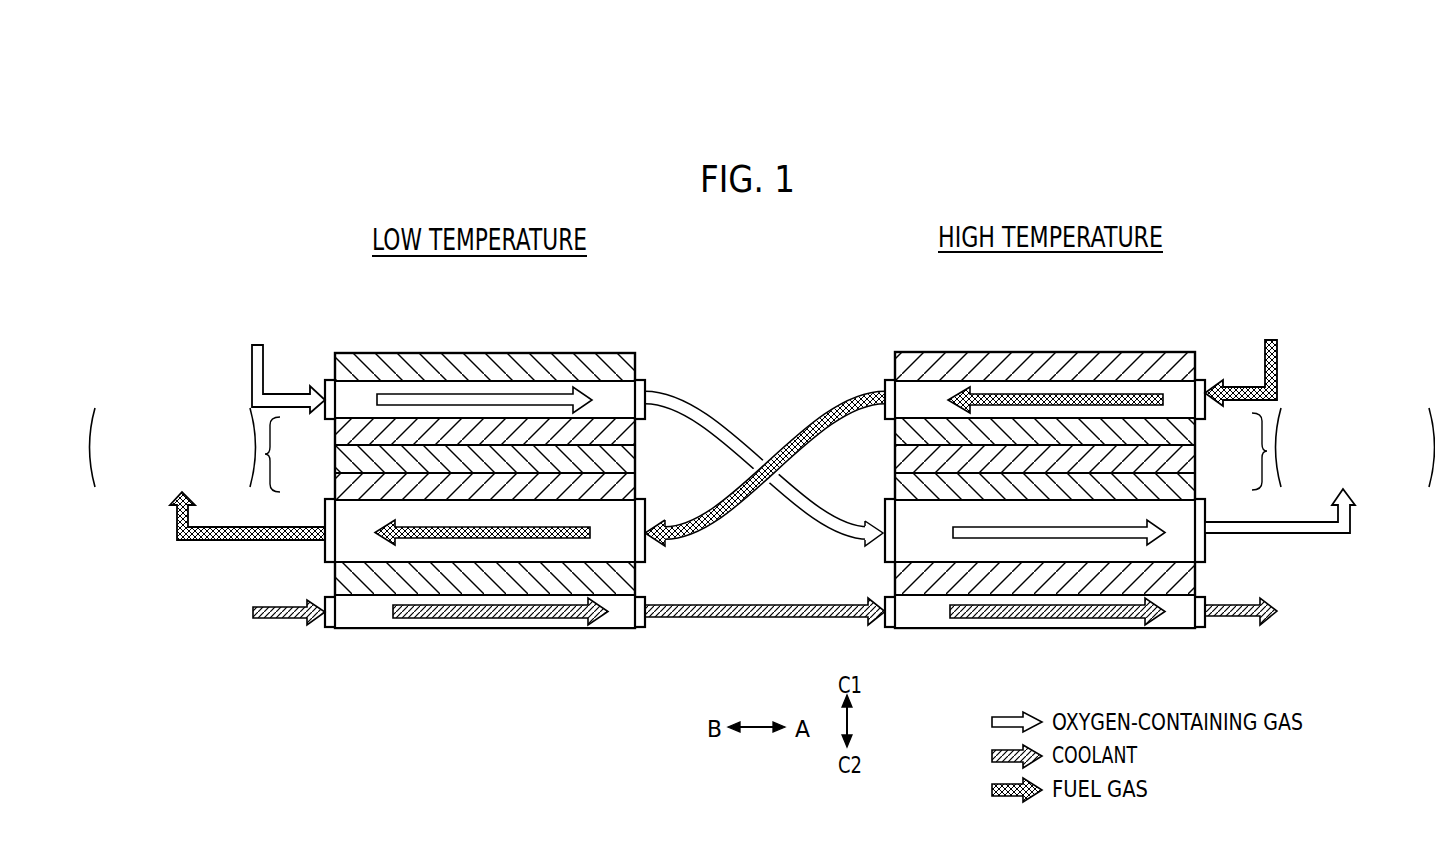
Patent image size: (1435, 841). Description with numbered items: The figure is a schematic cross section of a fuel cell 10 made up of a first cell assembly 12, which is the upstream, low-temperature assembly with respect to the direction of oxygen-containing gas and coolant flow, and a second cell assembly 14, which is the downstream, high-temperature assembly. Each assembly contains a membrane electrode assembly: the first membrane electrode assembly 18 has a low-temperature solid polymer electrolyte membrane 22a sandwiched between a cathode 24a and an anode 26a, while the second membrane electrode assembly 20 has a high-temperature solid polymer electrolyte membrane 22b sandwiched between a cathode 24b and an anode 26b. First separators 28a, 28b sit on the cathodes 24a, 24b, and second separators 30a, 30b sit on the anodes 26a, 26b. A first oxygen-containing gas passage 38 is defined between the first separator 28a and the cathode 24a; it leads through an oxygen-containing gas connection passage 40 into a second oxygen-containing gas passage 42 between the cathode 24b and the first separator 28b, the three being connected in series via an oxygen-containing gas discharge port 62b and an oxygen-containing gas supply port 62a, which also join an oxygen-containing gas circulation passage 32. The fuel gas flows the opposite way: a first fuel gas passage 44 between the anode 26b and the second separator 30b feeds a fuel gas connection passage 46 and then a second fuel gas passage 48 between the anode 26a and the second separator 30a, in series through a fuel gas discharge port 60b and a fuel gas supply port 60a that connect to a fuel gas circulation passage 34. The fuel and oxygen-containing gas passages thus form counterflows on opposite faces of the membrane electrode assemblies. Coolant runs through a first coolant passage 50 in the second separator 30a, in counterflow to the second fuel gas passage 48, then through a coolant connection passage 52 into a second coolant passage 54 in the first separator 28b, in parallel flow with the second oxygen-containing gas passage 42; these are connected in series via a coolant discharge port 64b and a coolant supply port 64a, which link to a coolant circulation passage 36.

The fuel cell 10 is at (932, 282).
The first cell assembly 12 is at (463, 331).
The second cell assembly 14 is at (998, 316).
The first membrane electrode assembly 18 is at (185, 439).
The second membrane electrode assembly 20 is at (1343, 437).
The solid polymer electrolyte membrane 22a is at (335, 458).
The solid polymer electrolyte membrane 22b is at (1197, 456).
The cathode 24a is at (335, 430).
The cathode 24b is at (1197, 484).
The anode 26a is at (335, 486).
The anode 26b is at (1197, 428).
The first separator 28a is at (362, 353).
The first separator 28b is at (1195, 576).
The second separator 30a is at (337, 583).
The second separator 30b is at (1163, 352).
The oxygen-containing gas circulation passage 32 is at (286, 393).
The fuel gas circulation passage 34 is at (240, 541).
The coolant circulation passage 36 is at (288, 621).
The first oxygen-containing gas passage 38 is at (612, 353).
The oxygen-containing gas connection passage 40 is at (726, 424).
The second oxygen-containing gas passage 42 is at (884, 510).
The first fuel gas passage 44 is at (918, 352).
The fuel gas connection passage 46 is at (808, 425).
The second fuel gas passage 48 is at (648, 512).
The first coolant passage 50 is at (360, 615).
The coolant connection passage 52 is at (760, 600).
The second coolant passage 54 is at (918, 615).
The fuel gas supply port 60a is at (648, 550).
The fuel gas discharge port 60b is at (330, 518).
The oxygen-containing gas supply port 62a is at (326, 383).
The oxygen-containing gas discharge port 62b is at (646, 380).
The coolant supply port 64a is at (328, 628).
The coolant discharge port 64b is at (641, 630).